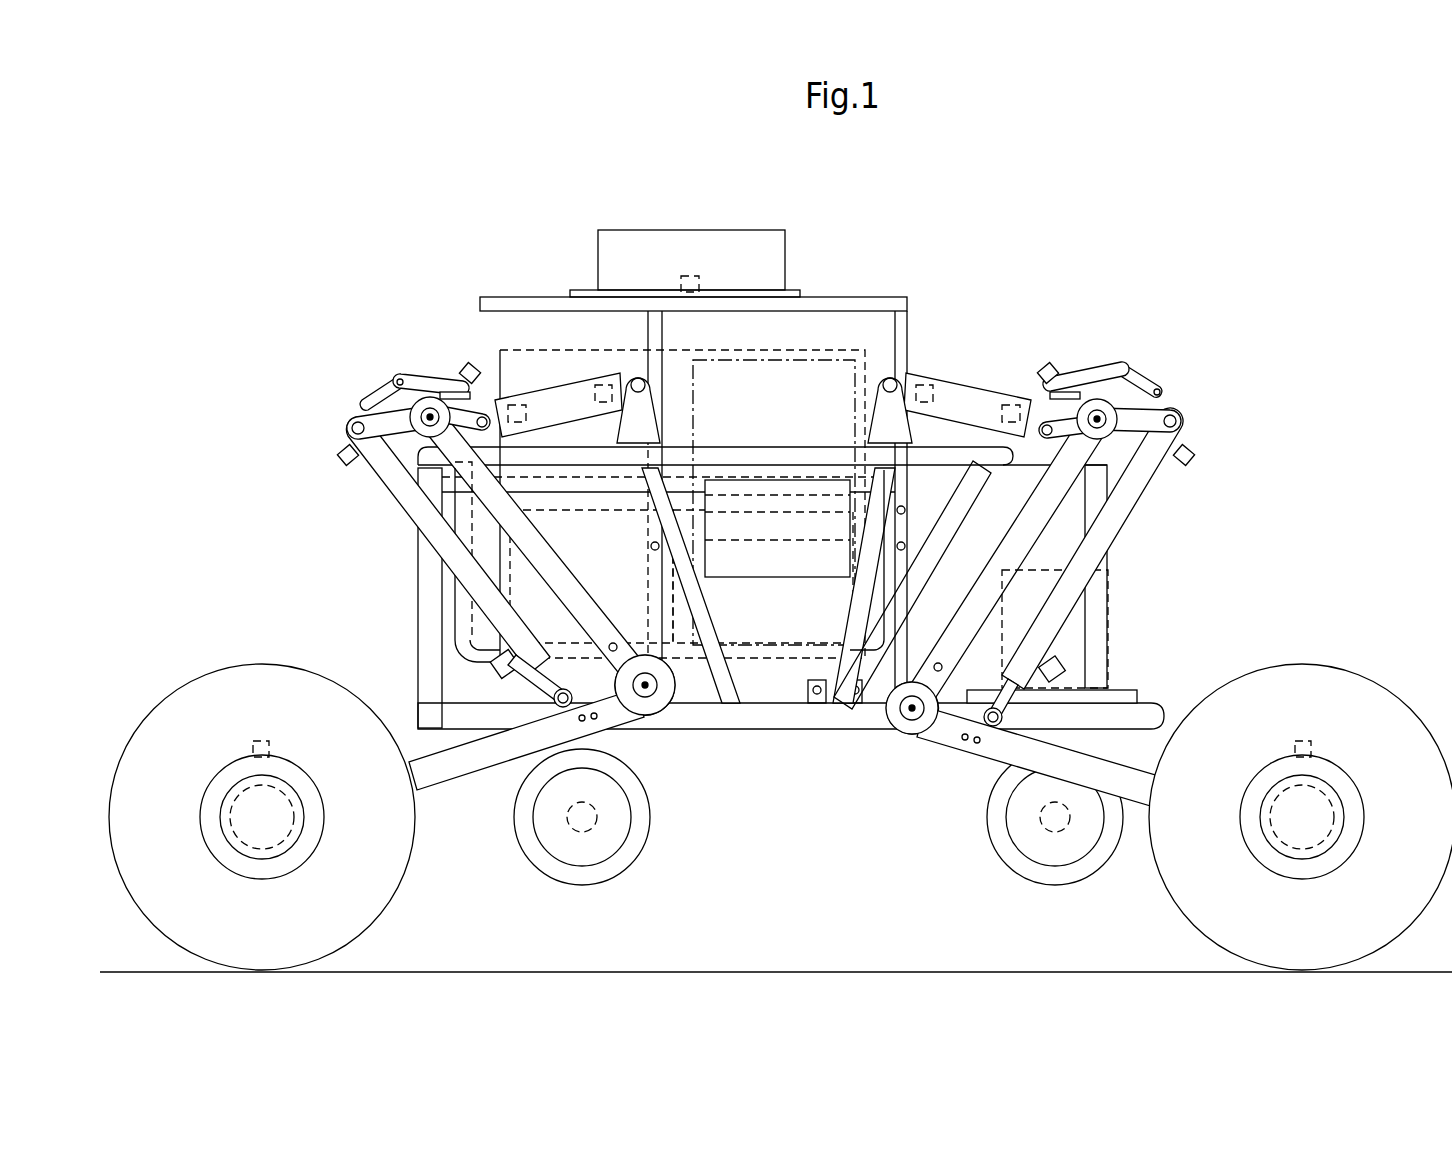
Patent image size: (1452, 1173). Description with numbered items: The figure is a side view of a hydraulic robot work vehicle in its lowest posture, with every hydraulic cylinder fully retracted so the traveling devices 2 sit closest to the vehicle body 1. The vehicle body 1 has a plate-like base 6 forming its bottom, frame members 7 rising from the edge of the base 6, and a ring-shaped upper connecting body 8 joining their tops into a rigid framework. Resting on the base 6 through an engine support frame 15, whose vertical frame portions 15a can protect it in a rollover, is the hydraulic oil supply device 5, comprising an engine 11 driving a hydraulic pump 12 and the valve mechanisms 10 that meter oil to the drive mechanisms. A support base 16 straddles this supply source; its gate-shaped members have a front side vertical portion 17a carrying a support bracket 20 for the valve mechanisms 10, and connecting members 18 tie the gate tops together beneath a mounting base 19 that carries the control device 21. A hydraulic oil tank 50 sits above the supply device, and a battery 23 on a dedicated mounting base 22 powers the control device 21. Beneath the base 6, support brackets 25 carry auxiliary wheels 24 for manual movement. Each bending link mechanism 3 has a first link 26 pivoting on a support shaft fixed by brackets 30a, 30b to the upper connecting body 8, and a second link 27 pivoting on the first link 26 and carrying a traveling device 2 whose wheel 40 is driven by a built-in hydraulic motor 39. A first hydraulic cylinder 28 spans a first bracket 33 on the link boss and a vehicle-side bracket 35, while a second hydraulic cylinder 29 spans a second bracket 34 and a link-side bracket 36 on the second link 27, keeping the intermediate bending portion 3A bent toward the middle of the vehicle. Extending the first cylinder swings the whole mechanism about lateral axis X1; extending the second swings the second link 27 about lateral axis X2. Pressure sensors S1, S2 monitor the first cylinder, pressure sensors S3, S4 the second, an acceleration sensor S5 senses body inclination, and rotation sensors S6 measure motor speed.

The vehicle body 1 is at (1050, 212).
The traveling device 2 is at (215, 672).
The bending link mechanism 3 is at (395, 530).
The intermediate bending portion 3A is at (680, 715).
The hydraulic oil supply device 5 is at (460, 553).
The base 6 is at (850, 727).
The frame member 7 is at (660, 556).
The upper connecting body 8 is at (752, 450).
The valve mechanism 10 is at (795, 565).
The engine 11 is at (460, 603).
The hydraulic pump 12 is at (755, 650).
The engine support frame 15 is at (548, 658).
The vertical frame portion 15a is at (495, 665).
The support base 16 is at (912, 318).
The front side vertical portion 17a is at (662, 330).
The connecting member 18 is at (485, 305).
The mounting base 19 is at (845, 297).
The support bracket 20 is at (783, 540).
The control device 21 is at (618, 230).
The mounting base 22 is at (1140, 700).
The battery 23 is at (1065, 655).
The auxiliary wheel 24 is at (595, 885).
The support bracket 25 is at (545, 835).
The first link 26 is at (545, 530).
The second link 27 is at (505, 710).
The first hydraulic cylinder 28 is at (575, 392).
The second hydraulic cylinder 29 is at (380, 512).
The bracket 30a is at (1090, 520).
The bracket 30b is at (400, 385).
The first bracket 33 is at (445, 380).
The second bracket 34 is at (352, 430).
The vehicle-side bracket 35 is at (660, 430).
The link-side bracket 36 is at (472, 768).
The hydraulic motor 39 is at (238, 850).
The wheel 40 is at (390, 905).
The hydraulic oil tank 50 is at (840, 345).
The first cap-side pressure sensor S1 is at (605, 385).
The first head-side pressure sensor S2 is at (475, 388).
The second cap-side pressure sensor S3 is at (340, 458).
The second head-side pressure sensor S4 is at (495, 672).
The acceleration sensor S5 is at (692, 276).
The rotation sensor S6 is at (253, 748).
The lateral axis X1 is at (426, 422).
The lateral axis X2 is at (646, 696).